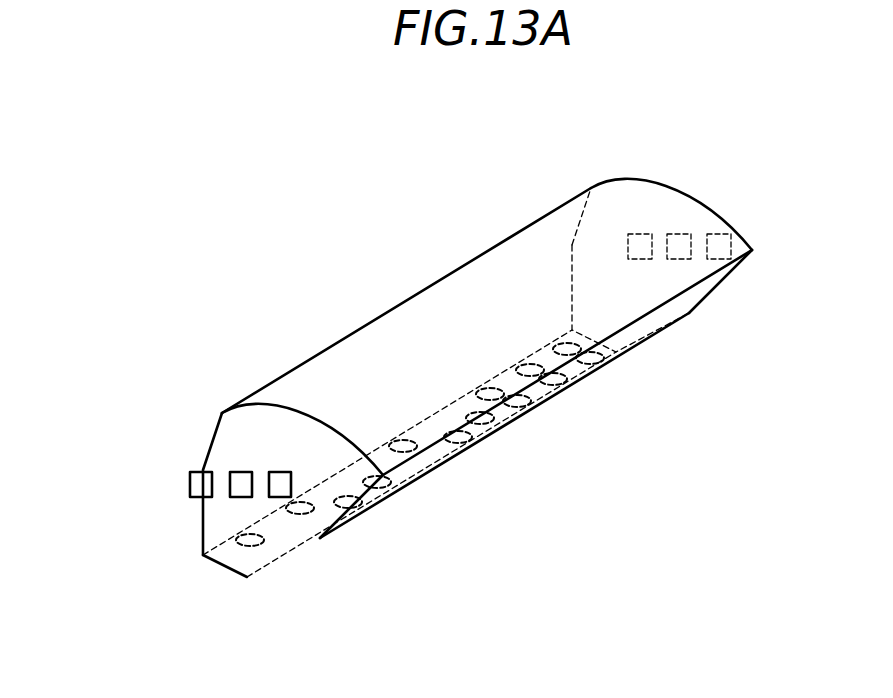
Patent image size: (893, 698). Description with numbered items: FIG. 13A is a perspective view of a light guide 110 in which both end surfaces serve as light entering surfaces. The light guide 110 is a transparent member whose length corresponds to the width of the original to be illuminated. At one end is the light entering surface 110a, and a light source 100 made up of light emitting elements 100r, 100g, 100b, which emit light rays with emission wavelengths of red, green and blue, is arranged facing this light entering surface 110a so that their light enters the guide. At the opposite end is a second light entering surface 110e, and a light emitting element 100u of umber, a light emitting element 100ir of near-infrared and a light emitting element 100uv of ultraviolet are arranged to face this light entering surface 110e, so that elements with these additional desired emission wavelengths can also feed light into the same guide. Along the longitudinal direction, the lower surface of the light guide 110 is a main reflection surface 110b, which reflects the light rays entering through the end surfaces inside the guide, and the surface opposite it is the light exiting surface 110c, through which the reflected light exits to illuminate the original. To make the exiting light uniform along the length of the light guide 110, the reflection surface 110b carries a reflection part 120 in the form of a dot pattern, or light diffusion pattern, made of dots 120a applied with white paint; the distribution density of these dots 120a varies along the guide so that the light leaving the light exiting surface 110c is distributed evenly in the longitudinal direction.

The light source 100 is at (161, 445).
The light emitting element 100r is at (279, 472).
The light emitting element 100g is at (240, 472).
The light emitting element 100b is at (153, 487).
The light emitting element 100u is at (640, 233).
The light emitting element 100ir is at (678, 233).
The light emitting element 100uv is at (727, 234).
The light guide 110 is at (388, 238).
The light entering surface 110a is at (225, 415).
The reflection surface 110b is at (228, 573).
The light exiting surface 110c is at (352, 349).
The light entering surface 110e is at (618, 203).
The reflection part 120 is at (722, 365).
The dots 120a is at (367, 507).